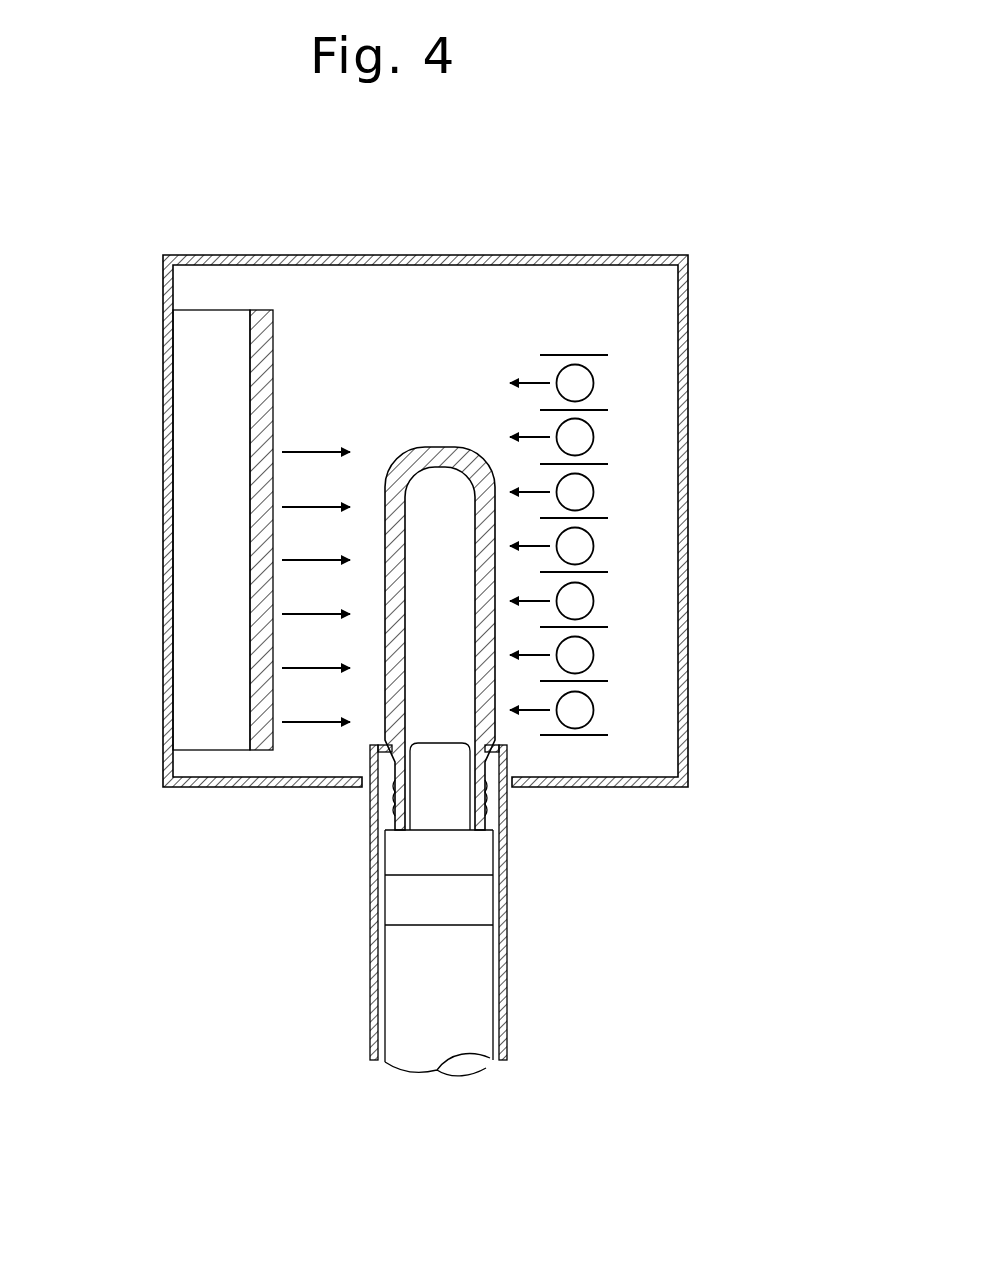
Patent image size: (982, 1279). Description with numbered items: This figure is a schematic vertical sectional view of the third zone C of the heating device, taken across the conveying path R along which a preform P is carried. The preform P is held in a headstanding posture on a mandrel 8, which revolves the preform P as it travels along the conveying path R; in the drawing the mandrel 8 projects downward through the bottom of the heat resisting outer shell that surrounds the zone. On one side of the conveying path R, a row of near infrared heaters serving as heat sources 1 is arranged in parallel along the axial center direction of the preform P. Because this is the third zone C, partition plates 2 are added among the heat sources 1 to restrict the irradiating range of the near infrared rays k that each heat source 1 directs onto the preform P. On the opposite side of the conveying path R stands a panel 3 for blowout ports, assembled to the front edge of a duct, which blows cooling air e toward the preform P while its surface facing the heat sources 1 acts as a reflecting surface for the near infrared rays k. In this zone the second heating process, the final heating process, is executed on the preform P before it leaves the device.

The heat source 1 is at (594, 437).
The partition plate 2 is at (600, 410).
The panel for blowout ports 3 is at (250, 552).
The mandrel 8 is at (482, 902).
The preform P is at (410, 455).
The third zone C is at (413, 346).
The cooling air e is at (313, 452).
The near infrared rays k is at (530, 383).
The conveying path R is at (437, 988).